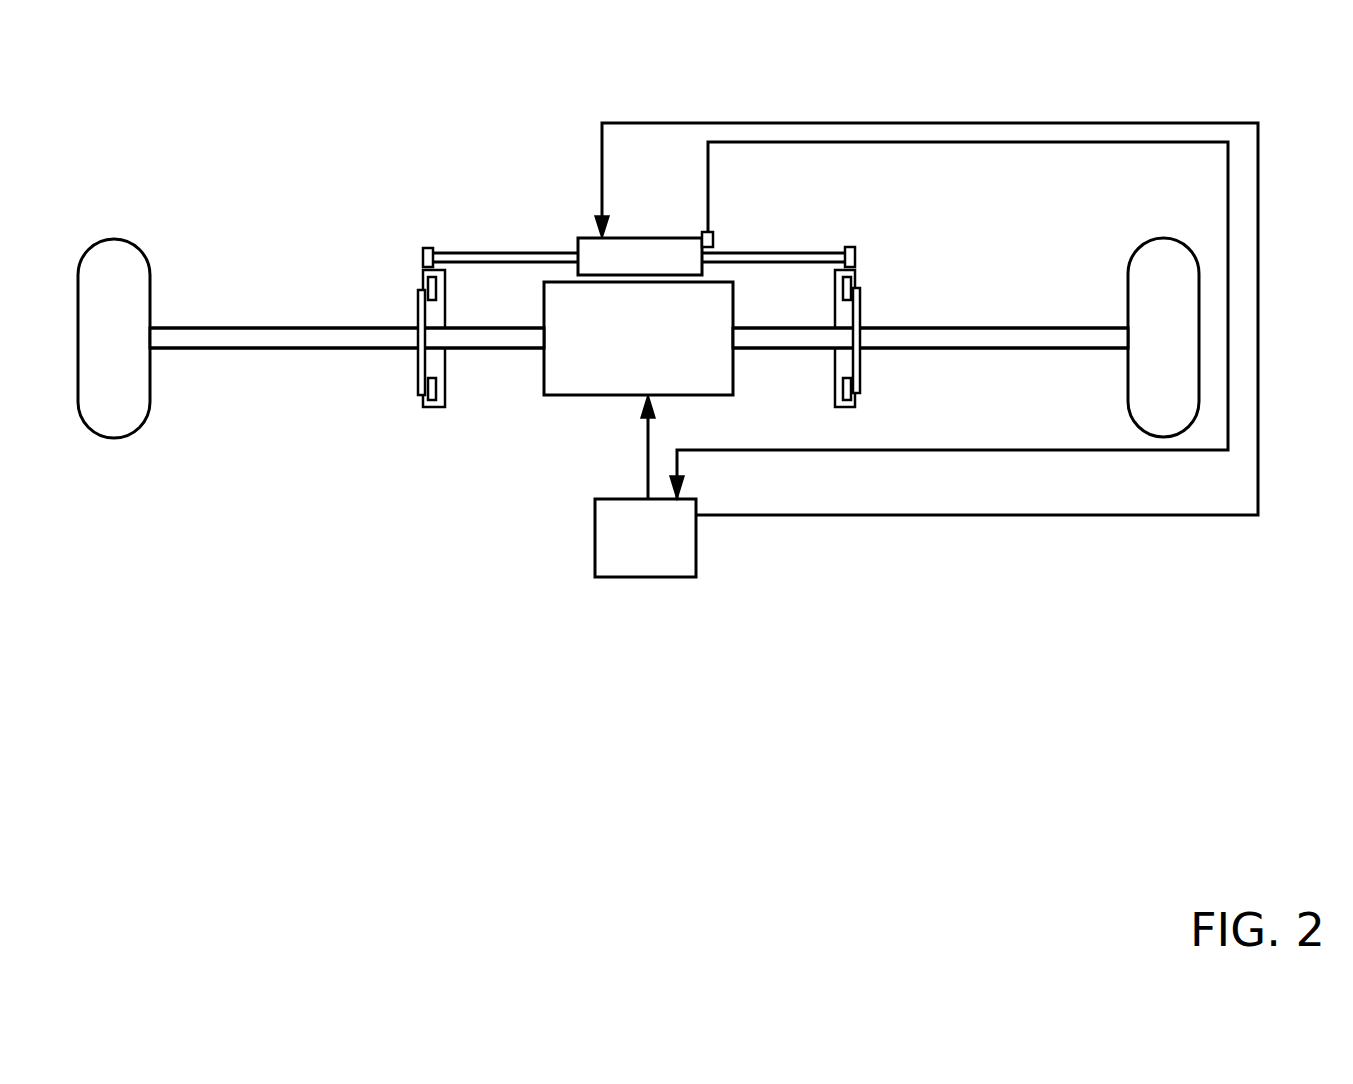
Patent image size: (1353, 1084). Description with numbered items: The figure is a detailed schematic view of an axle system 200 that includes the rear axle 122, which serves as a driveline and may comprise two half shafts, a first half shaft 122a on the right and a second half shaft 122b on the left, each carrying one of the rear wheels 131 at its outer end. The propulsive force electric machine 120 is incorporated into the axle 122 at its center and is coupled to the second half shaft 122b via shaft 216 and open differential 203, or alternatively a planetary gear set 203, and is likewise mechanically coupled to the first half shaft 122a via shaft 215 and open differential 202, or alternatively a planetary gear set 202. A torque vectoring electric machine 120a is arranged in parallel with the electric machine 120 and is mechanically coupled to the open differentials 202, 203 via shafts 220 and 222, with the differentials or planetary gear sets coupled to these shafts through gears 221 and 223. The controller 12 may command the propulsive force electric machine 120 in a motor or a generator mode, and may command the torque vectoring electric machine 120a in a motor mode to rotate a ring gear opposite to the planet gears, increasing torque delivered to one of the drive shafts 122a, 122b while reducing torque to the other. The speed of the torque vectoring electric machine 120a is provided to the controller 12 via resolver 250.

The axle system 200 is at (167, 95).
The controller 12 is at (645, 538).
The electric machine 120 is at (638, 338).
The torque vectoring electric machine 120a is at (620, 238).
The resolver 250 is at (713, 232).
The shaft 220 is at (500, 253).
The shaft 222 is at (772, 253).
The gear 221 is at (429, 248).
The gear 223 is at (851, 247).
The rear wheels 131 is at (115, 240).
The rear axle 122 is at (929, 217).
The first half shaft 122a is at (930, 328).
The second half shaft 122b is at (208, 328).
The shaft 215 is at (764, 328).
The shaft 216 is at (475, 328).
The open differential 202 is at (867, 281).
The open differential 203 is at (402, 275).